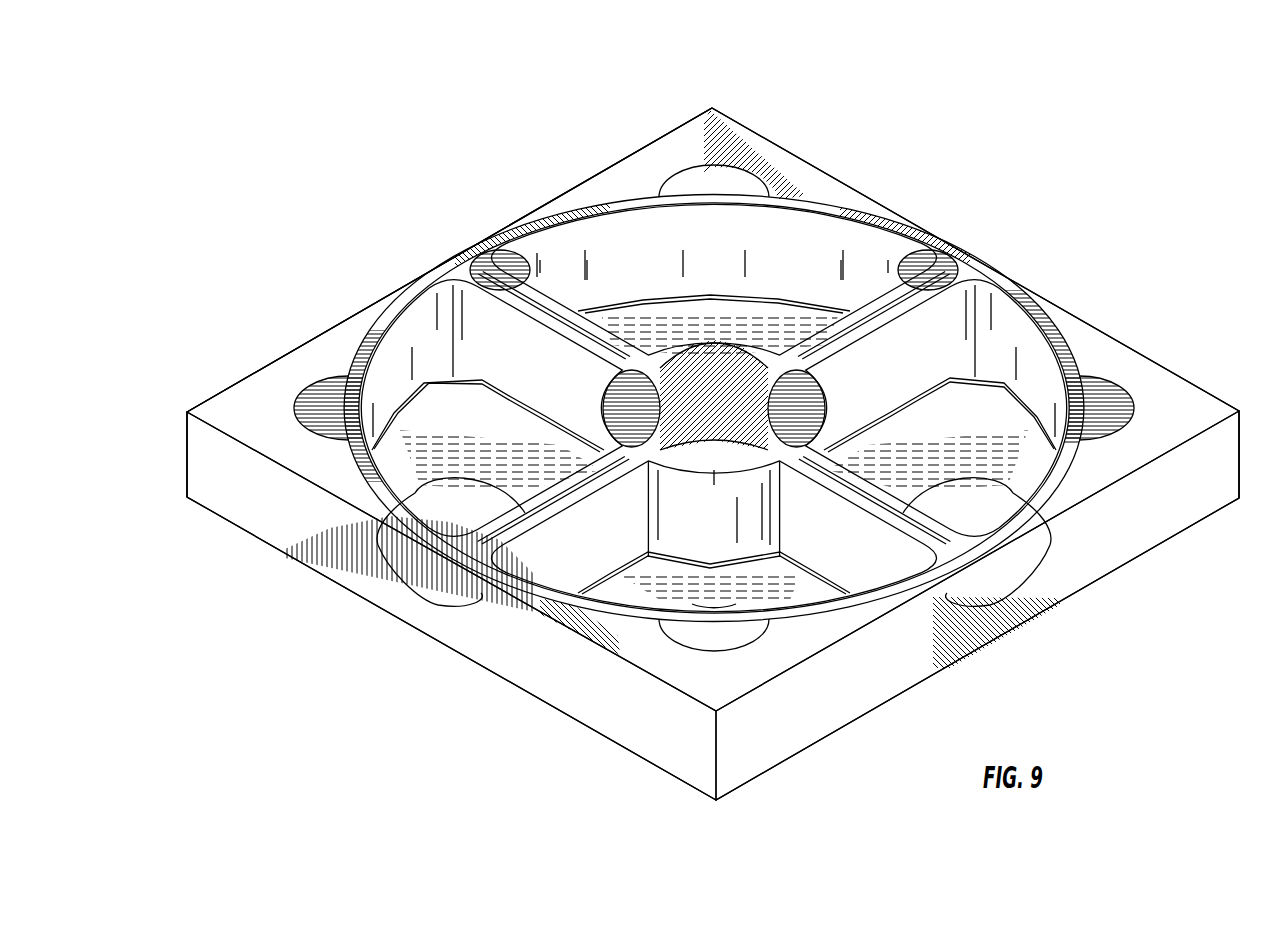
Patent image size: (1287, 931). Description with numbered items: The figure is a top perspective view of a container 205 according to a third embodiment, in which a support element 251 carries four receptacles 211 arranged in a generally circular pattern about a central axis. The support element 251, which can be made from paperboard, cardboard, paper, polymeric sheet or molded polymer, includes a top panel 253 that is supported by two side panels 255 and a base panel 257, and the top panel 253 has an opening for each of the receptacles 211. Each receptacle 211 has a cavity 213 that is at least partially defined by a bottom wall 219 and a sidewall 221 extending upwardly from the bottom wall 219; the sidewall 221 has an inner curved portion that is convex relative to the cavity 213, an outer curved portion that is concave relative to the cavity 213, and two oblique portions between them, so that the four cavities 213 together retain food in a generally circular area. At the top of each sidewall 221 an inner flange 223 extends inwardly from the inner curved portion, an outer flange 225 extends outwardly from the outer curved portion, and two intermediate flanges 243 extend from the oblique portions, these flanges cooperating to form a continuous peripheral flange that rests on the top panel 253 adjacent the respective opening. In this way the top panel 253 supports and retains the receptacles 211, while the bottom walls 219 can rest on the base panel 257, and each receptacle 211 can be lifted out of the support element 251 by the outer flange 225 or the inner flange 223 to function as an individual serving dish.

The container 205 is at (1145, 305).
The receptacle 211 is at (548, 219).
The cavity 213 is at (770, 242).
The bottom wall 219 is at (635, 333).
The sidewall 221 is at (826, 265).
The inner flange 223 is at (644, 405).
The outer flange 225 is at (648, 196).
The intermediate flange 243 is at (505, 250).
The support element 251 is at (215, 385).
The top panel 253 is at (690, 147).
The side panel 255 is at (680, 757).
The base panel 257 is at (783, 740).